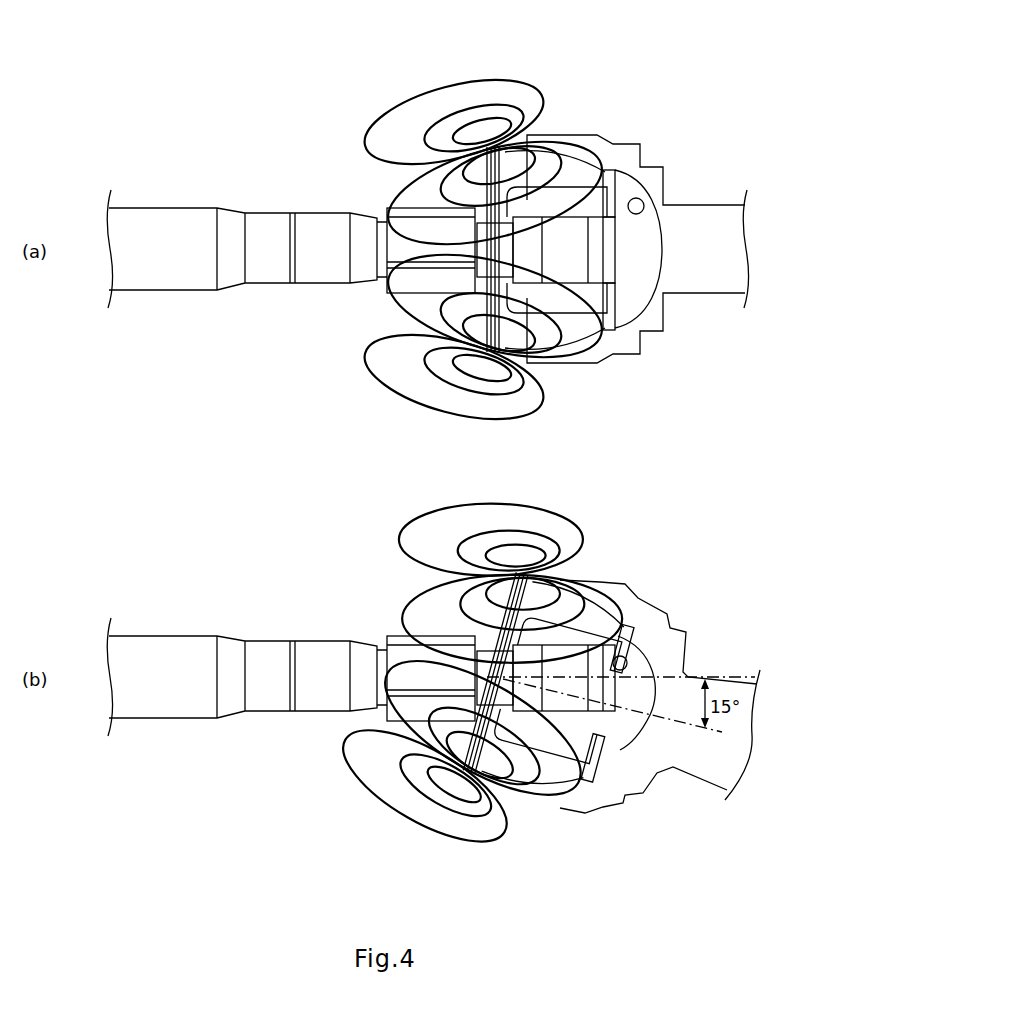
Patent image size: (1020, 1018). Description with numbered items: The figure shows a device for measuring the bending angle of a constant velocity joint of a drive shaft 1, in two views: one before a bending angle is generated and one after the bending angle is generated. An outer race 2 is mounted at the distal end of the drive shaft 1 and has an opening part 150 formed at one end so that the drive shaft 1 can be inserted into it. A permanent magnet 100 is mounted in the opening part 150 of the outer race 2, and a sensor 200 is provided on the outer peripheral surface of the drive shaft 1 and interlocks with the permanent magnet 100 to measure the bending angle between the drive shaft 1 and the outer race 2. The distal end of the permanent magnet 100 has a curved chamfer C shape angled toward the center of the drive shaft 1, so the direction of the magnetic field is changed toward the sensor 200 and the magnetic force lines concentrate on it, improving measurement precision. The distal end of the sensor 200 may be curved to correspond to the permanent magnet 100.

The drive shaft 1 is at (233, 302).
The outer race 2 is at (641, 140).
The permanent magnet 100 is at (483, 132).
The opening part 150 is at (645, 212).
The sensor 200 is at (380, 298).
The curved chamfer C is at (490, 355).